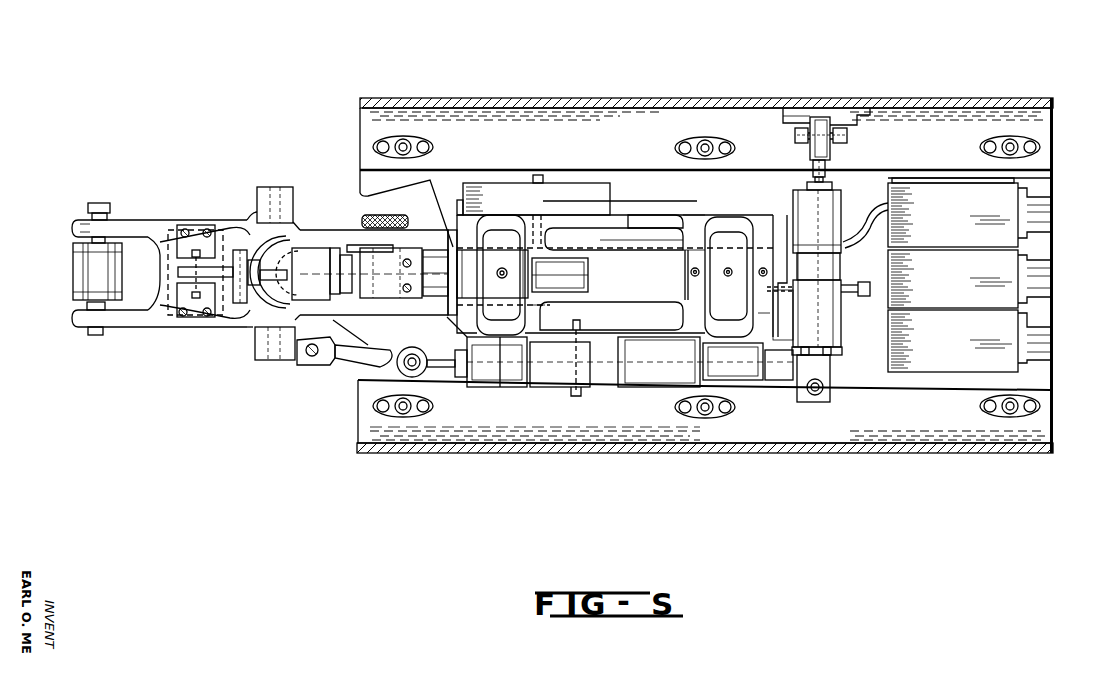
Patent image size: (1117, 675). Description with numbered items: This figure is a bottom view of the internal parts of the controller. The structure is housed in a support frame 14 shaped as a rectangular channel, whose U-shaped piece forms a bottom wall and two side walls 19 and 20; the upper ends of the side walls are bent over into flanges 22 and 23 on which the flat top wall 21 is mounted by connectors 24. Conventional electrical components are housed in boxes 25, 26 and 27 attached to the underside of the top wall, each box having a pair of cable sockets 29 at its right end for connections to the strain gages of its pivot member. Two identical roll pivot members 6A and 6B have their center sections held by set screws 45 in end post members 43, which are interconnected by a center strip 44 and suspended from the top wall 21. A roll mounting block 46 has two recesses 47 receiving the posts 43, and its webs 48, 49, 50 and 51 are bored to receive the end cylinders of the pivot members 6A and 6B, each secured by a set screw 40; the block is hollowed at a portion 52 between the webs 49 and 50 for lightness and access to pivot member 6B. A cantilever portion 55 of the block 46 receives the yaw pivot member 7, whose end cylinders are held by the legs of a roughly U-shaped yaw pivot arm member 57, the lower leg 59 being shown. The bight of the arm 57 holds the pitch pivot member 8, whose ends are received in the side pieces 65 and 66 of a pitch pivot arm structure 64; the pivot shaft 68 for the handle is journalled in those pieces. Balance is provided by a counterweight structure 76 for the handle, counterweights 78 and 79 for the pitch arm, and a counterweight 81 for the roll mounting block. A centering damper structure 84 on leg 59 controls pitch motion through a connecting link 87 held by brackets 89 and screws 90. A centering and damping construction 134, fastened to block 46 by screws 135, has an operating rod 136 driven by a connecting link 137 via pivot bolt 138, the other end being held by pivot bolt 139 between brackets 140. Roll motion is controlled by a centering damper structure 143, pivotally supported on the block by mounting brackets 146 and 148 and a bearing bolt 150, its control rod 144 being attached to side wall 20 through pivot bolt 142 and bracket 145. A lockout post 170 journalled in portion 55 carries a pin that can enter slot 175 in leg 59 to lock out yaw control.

The support frame 14 is at (937, 93).
The side wall 19 is at (960, 453).
The side wall 20 is at (1042, 103).
The top wall 21 is at (1045, 180).
The flange 22 is at (1045, 147).
The flange 23 is at (1040, 430).
The connectors 24 is at (412, 145).
The box 25 is at (919, 349).
The box 26 is at (914, 293).
The box 27 is at (929, 241).
The cable sockets 29 is at (1045, 222).
The yaw pivot member 7 is at (291, 246).
The pitch pivot member 8 is at (165, 230).
The set screw 40 is at (693, 270).
The end post member 43 is at (524, 312).
The center strip 44 is at (641, 249).
The set screw 45 is at (513, 276).
The roll mounting block 46 is at (633, 214).
The recess 47 is at (490, 223).
The web 48 is at (458, 238).
The web 49 is at (563, 243).
The web 50 is at (695, 230).
The web 51 is at (773, 227).
The hollow portion 52 is at (651, 228).
The cantilever portion 55 is at (455, 237).
The yaw pivot arm member 57 is at (319, 229).
The leg 59 is at (447, 322).
The pitch pivot arm structure 64 is at (228, 220).
The side piece 65 is at (128, 220).
The side piece 66 is at (128, 327).
The pivot shaft 68 is at (92, 208).
The counterweight structure 76 is at (72, 274).
The counterweight 78 is at (271, 187).
The counterweight 79 is at (276, 361).
The counterweight 81 is at (584, 184).
The centering damper structure 84 is at (594, 279).
The connecting link 87 is at (181, 277).
The brackets 89 is at (200, 226).
The screws 90 is at (207, 228).
The centering and damping construction 134 is at (491, 391).
The screws 135 is at (576, 399).
The operating rod 136 is at (446, 370).
The connecting link 137 is at (347, 362).
The pivot bolt 138 is at (405, 355).
The pivot bolt 139 is at (312, 357).
The brackets 140 is at (362, 353).
The pivot bolt 142 is at (796, 140).
The centering damper structure 143 is at (843, 204).
The control rod 144 is at (826, 164).
The bracket 145 is at (857, 120).
The mounting bracket 146 is at (790, 227).
The second mounting bracket 148 is at (860, 226).
The bearing bolt 150 is at (868, 299).
The lockout post 170 is at (388, 210).
The slot 175 is at (360, 247).
The roll pivot member 6A is at (762, 314).
The roll pivot member 6B is at (542, 311).